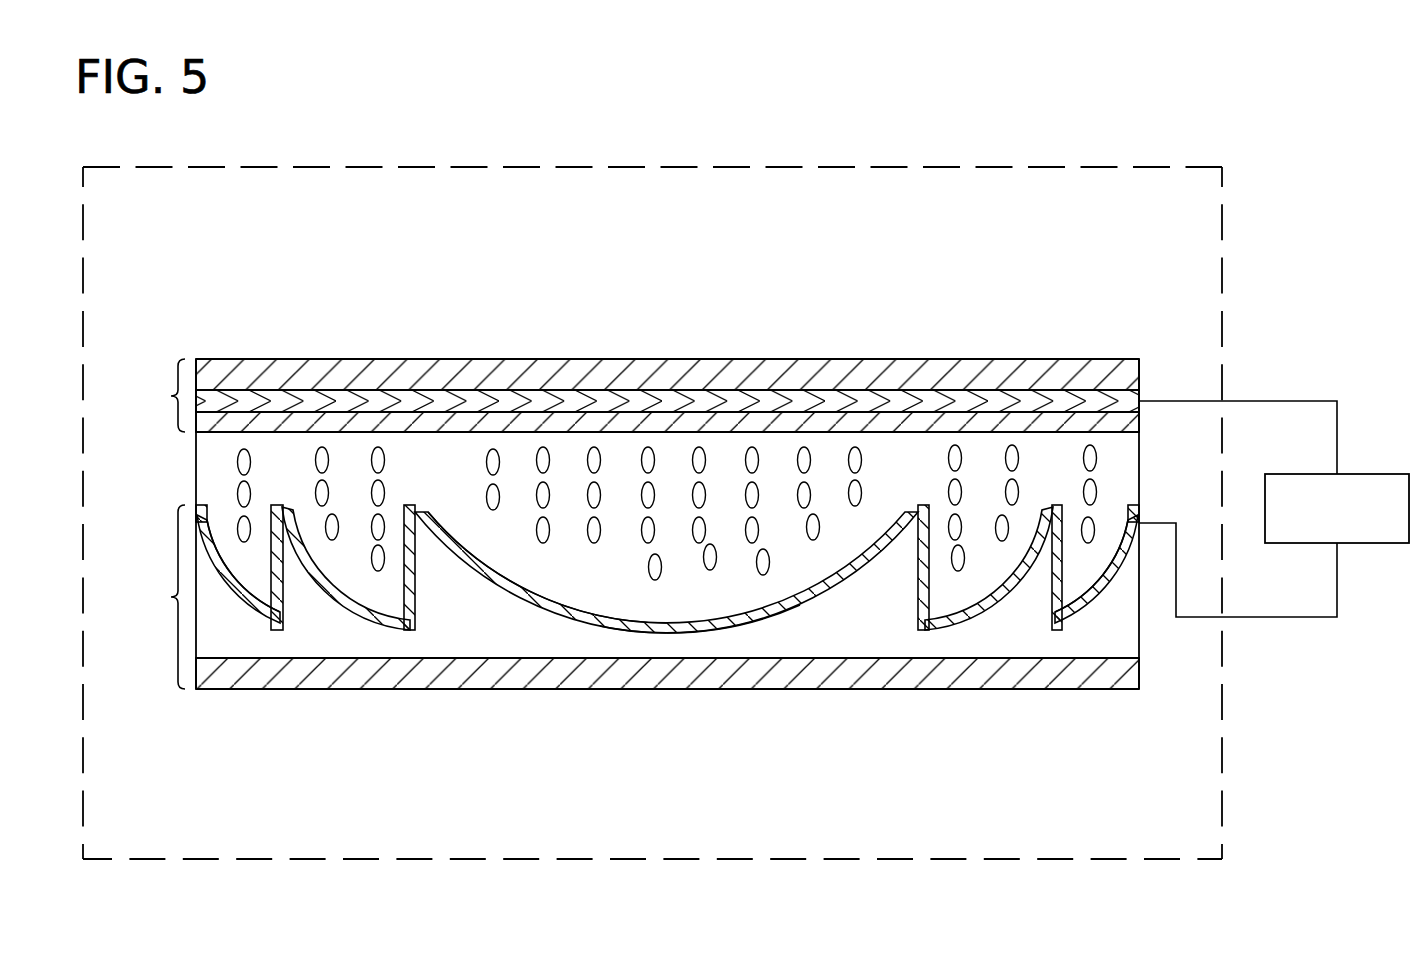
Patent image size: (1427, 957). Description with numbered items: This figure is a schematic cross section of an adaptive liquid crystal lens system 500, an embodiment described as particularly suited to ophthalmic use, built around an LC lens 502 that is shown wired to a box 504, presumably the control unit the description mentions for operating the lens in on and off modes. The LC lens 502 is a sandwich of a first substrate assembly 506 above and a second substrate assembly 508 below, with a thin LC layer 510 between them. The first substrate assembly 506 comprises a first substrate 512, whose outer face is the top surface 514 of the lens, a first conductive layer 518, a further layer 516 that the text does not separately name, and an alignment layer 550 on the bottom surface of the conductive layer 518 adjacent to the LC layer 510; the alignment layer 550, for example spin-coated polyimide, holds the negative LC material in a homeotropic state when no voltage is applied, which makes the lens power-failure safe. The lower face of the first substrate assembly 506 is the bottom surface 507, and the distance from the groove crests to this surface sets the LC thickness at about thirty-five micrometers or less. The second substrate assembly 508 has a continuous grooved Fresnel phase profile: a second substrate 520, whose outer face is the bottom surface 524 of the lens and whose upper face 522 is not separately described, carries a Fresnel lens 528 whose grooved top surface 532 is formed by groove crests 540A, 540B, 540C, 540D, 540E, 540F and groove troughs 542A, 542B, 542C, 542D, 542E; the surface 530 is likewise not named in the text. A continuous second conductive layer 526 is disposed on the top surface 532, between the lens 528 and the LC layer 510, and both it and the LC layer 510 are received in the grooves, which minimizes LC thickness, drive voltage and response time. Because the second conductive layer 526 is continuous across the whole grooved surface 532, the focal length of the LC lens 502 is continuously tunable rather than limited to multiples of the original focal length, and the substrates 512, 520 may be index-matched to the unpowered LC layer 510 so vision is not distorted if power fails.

The LC lens system 500 is at (861, 112).
The LC lens 502 is at (1050, 166).
The controller 504 is at (1368, 474).
The first substrate assembly 506 is at (623, 325).
The bottom surface of the first substrate 507 is at (196, 438).
The second substrate assembly 508 is at (643, 527).
The LC layer 510 is at (600, 602).
The first substrate 512 is at (543, 359).
The top surface 514 is at (760, 357).
The second substrate 516 is at (818, 386).
The first conductive layer 518 is at (600, 400).
The second substrate 520 is at (742, 688).
The top surface of bottom plate 522 is at (905, 666).
The bottom surface 524 is at (990, 695).
The second conductive layer 526 is at (502, 582).
The lens 528 is at (868, 592).
The inner reflective surface 530 is at (1085, 650).
The top surface of the lens 532 is at (241, 593).
The groove crest 540A is at (201, 503).
The groove crest 540B is at (285, 502).
The groove crest 540C is at (418, 500).
The groove crest 540D is at (917, 501).
The groove crest 540E is at (1050, 500).
The groove crest 540F is at (1135, 500).
The groove trough 542A is at (275, 611).
The groove trough 542B is at (410, 617).
The groove trough 542C is at (692, 627).
The groove trough 542D is at (928, 615).
The groove trough 542E is at (1057, 613).
The alignment layer 550 is at (742, 420).